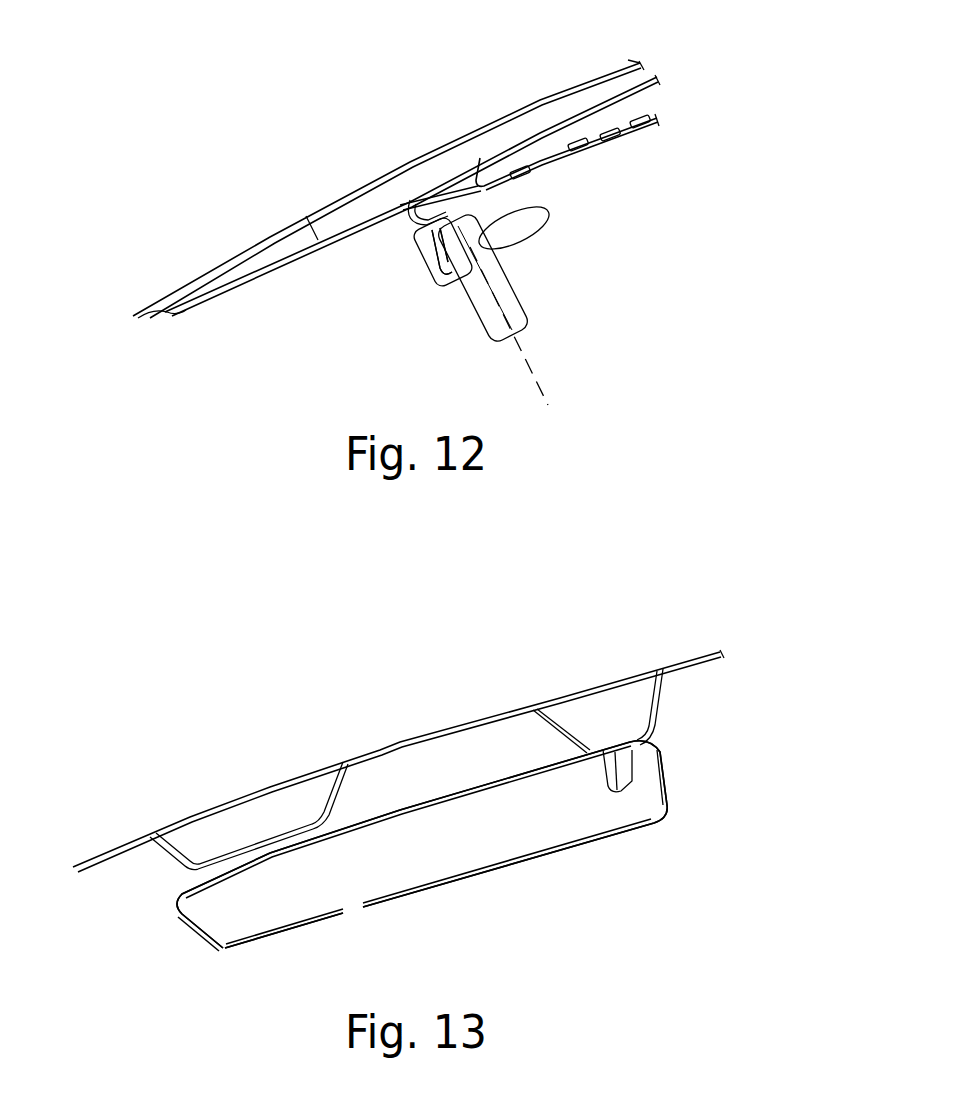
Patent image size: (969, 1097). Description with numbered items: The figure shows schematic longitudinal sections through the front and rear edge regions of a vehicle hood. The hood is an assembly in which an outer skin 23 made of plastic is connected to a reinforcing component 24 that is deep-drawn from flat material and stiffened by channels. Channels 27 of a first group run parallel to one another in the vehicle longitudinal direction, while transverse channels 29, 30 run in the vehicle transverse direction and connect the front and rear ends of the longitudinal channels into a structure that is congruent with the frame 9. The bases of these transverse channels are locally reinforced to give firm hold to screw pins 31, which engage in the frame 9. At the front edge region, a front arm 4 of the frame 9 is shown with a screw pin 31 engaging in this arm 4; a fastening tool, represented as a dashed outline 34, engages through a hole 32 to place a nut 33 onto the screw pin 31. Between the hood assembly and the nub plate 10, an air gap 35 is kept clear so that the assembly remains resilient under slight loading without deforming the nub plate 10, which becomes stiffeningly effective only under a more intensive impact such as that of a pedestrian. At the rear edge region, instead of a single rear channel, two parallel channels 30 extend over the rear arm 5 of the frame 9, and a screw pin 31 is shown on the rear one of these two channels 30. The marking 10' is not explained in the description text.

In FIG. 12, the outer skin 23 is at (233, 258).
In FIG. 13, the outer skin 23 is at (413, 735).
In FIG. 12, the reinforcing component 24 is at (200, 318).
In FIG. 12, the channels of the first group 27 is at (306, 216).
In FIG. 12, the transverse channel 29 is at (410, 200).
In FIG. 12, the nub plate 10 is at (529, 141).
In FIG. 12, the rail slots 10' is at (589, 168).
In FIG. 12, the air gap 35 is at (630, 103).
In FIG. 12, the nut 33 is at (530, 212).
In FIG. 12, the hole 32 is at (505, 262).
In FIG. 12, the screw pin 31 is at (440, 248).
In FIG. 13, the screw pin 31 is at (633, 767).
In FIG. 12, the frame 9 is at (440, 265).
In FIG. 13, the frame 9 is at (422, 844).
In FIG. 12, the front arm 4 is at (442, 251).
In FIG. 12, the dashed outline 34 is at (477, 298).
In FIG. 13, the transverse channel 30 is at (327, 790).
In FIG. 13, the rear arm 5 is at (180, 923).